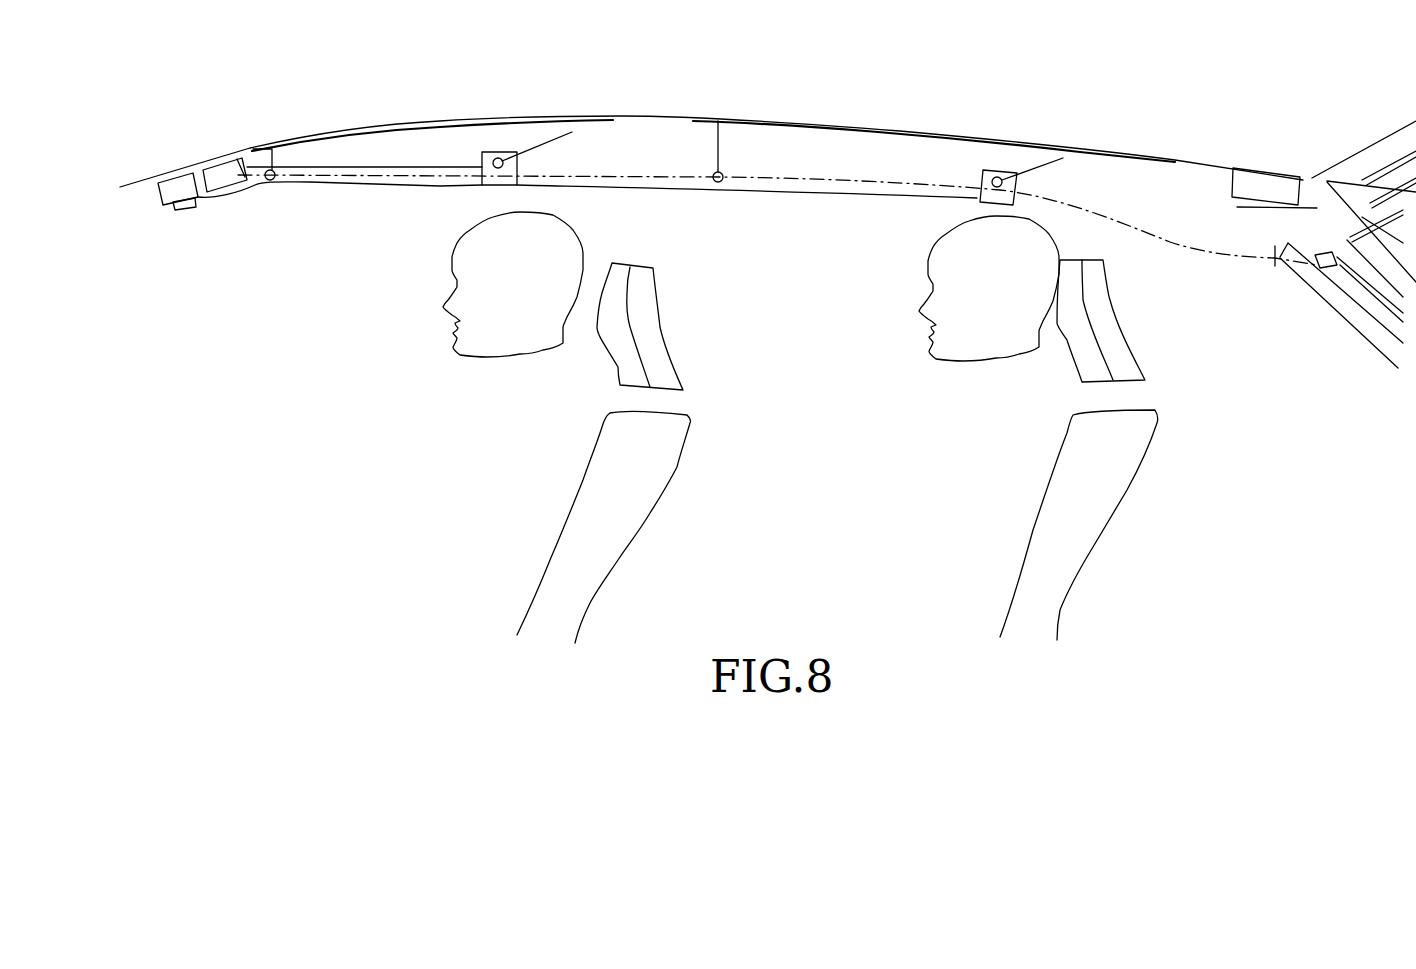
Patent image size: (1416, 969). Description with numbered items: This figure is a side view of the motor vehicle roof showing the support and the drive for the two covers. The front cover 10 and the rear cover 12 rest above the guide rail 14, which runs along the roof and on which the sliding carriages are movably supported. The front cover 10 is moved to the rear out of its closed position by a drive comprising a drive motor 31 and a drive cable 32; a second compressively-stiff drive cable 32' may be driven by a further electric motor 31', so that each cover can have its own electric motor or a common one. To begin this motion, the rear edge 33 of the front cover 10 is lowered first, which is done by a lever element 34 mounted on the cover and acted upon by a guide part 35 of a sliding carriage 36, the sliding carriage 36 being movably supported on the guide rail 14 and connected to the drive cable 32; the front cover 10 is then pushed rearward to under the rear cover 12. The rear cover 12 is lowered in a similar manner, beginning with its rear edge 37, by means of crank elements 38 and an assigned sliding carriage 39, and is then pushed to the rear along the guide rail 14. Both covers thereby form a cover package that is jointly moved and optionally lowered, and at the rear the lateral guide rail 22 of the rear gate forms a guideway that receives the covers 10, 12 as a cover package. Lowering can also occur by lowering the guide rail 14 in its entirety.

The front cover 10 is at (477, 120).
The rear cover 12 is at (858, 127).
The guide rail 14 is at (385, 178).
The lateral guide rail 22 is at (1350, 313).
The drive motor 31 is at (224, 150).
The electric motor 31' is at (160, 159).
The drive cable 32 is at (364, 129).
The drive cable 32' is at (587, 219).
The rear edge 33 is at (608, 100).
The lever element 34 is at (538, 147).
The guide part 35 is at (500, 158).
The sliding carriage 36 is at (481, 168).
The rear edge 37 is at (1168, 146).
The crank element 38 is at (1033, 162).
The sliding carriage 39 is at (981, 178).